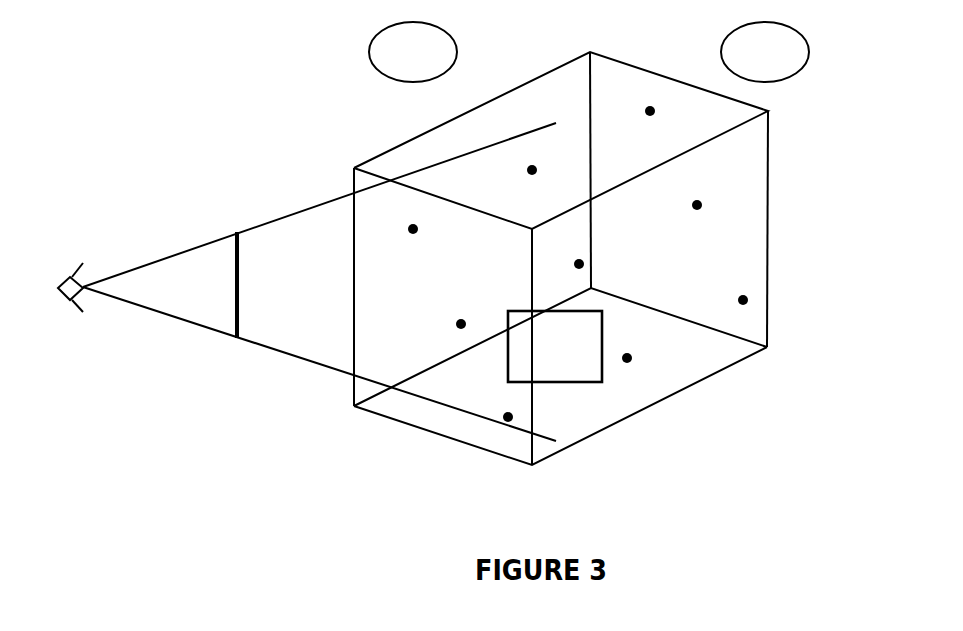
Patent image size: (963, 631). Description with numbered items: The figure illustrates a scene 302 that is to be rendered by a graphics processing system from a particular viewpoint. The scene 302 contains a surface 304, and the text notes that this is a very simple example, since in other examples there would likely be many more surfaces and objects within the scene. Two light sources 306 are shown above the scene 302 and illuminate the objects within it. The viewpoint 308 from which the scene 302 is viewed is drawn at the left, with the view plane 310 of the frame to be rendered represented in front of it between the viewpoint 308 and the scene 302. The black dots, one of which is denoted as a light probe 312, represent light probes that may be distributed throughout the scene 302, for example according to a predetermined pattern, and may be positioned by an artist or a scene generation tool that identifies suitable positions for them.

The scene 302 is at (768, 158).
The surface 304 is at (602, 382).
The light sources 306 is at (862, 50).
The viewpoint 308 is at (70, 277).
The view plane 310 is at (236, 250).
The light probe 312 is at (745, 298).